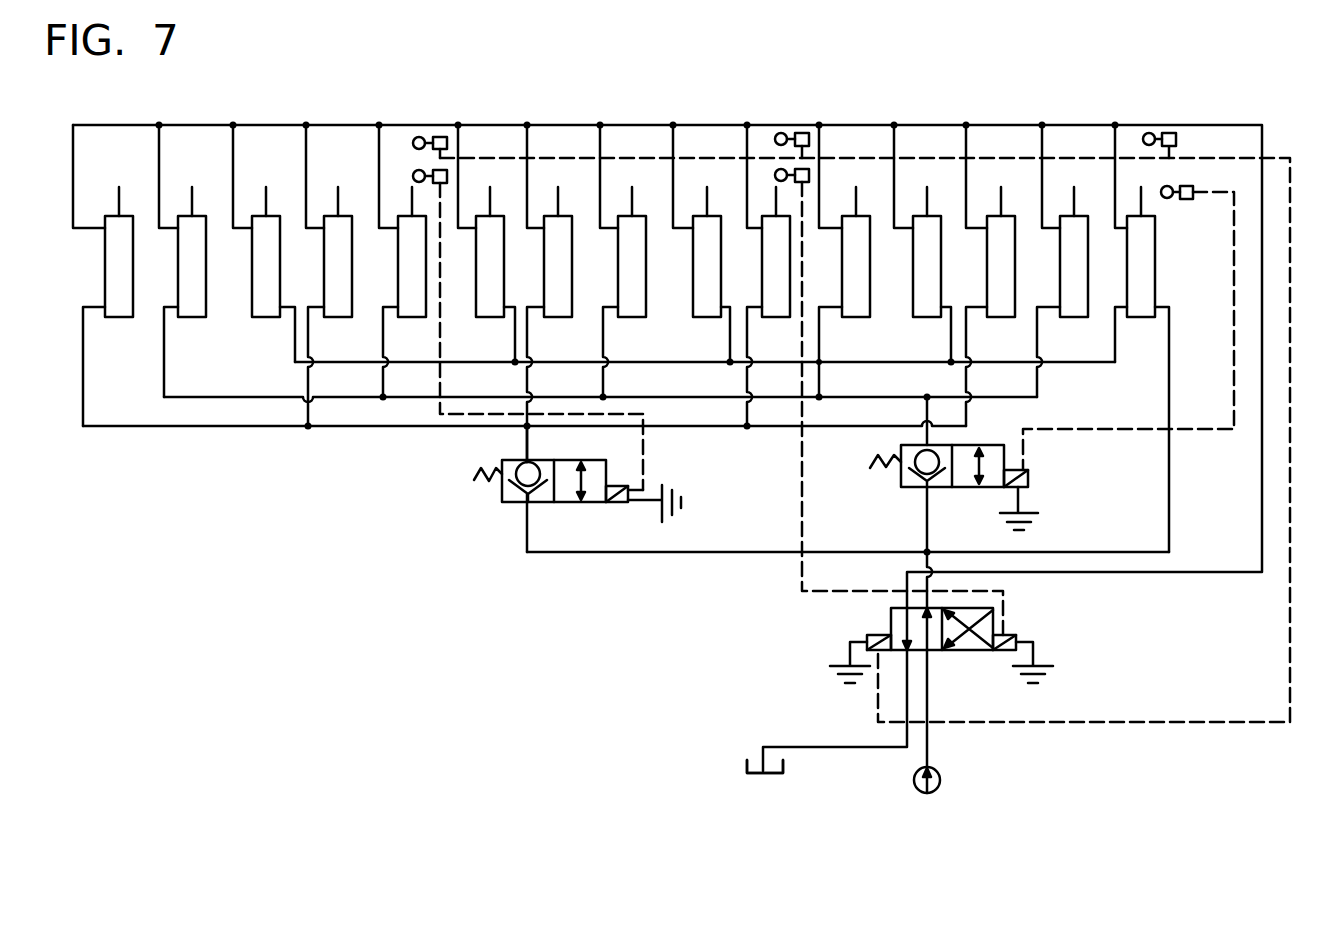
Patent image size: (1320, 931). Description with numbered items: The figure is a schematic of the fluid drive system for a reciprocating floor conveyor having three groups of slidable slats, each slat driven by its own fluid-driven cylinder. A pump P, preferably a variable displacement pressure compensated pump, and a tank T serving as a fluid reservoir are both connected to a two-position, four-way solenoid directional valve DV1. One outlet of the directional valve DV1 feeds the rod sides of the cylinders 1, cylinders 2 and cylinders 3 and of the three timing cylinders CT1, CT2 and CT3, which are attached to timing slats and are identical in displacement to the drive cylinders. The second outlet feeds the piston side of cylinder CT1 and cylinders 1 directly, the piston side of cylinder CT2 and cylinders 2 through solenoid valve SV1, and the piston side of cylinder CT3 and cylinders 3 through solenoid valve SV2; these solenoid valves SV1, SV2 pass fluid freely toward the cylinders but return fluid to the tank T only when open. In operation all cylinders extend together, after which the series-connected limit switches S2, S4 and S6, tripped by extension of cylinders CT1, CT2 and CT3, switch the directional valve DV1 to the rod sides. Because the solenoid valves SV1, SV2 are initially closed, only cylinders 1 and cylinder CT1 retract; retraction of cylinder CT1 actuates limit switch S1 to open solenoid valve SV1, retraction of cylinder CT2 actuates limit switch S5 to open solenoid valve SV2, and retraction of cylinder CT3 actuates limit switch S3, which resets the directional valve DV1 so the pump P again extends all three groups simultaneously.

The cylinders of the first slat group 1 is at (278, 210).
The cylinders of the second slat group 2 is at (204, 210).
The cylinders of the third slat group 3 is at (131, 210).
The timing cylinder CT1 is at (1155, 252).
The timing cylinder CT2 is at (426, 308).
The timing cylinder CT3 is at (790, 305).
The limit switch S1 is at (1190, 199).
The limit switch S2 is at (1172, 132).
The limit switch S3 is at (810, 169).
The limit switch S4 is at (800, 133).
The limit switch S5 is at (448, 172).
The limit switch S6 is at (441, 136).
The solenoid valve SV1 is at (978, 487).
The solenoid valve SV2 is at (577, 489).
The solenoid fluid directional valve DV1 is at (964, 645).
The pump P is at (940, 778).
The tank T is at (748, 773).